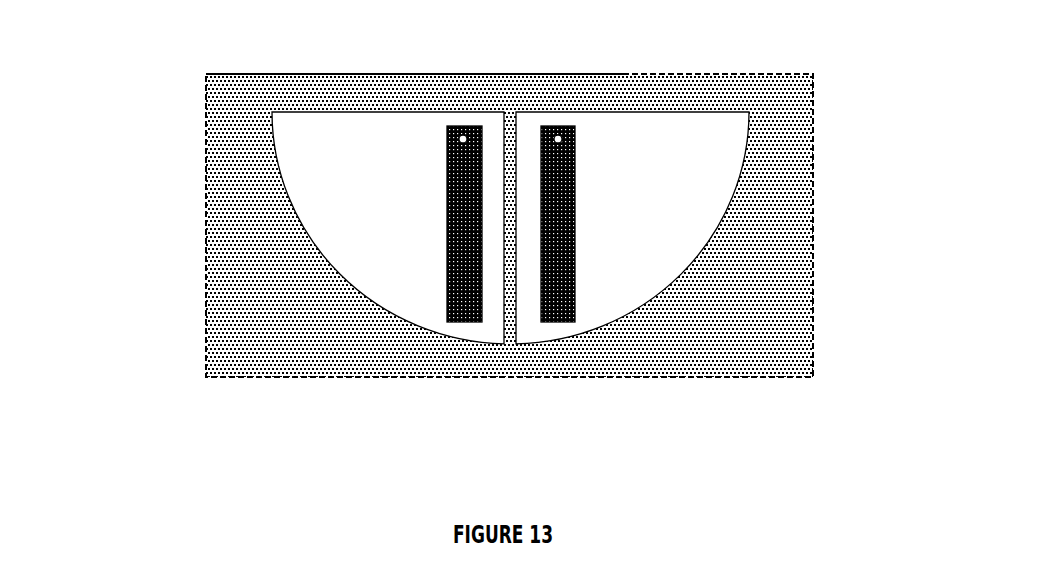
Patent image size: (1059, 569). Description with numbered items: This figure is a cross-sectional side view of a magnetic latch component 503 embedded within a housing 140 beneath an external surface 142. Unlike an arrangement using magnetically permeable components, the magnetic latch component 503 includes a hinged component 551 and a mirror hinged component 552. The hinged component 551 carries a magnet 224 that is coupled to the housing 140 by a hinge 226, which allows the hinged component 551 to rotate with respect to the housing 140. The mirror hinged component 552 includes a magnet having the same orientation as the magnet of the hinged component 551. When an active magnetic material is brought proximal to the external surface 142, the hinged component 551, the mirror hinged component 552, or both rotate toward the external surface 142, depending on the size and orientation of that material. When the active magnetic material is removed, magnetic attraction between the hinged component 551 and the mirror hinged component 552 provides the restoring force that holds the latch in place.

The magnetic latch component 503 is at (305, 222).
The hinge 226 is at (462, 135).
The external surface 142 is at (479, 71).
The housing 140 is at (800, 79).
The magnet 224 is at (467, 310).
The hinged component 551 is at (477, 320).
The mirror hinged component 552 is at (565, 320).